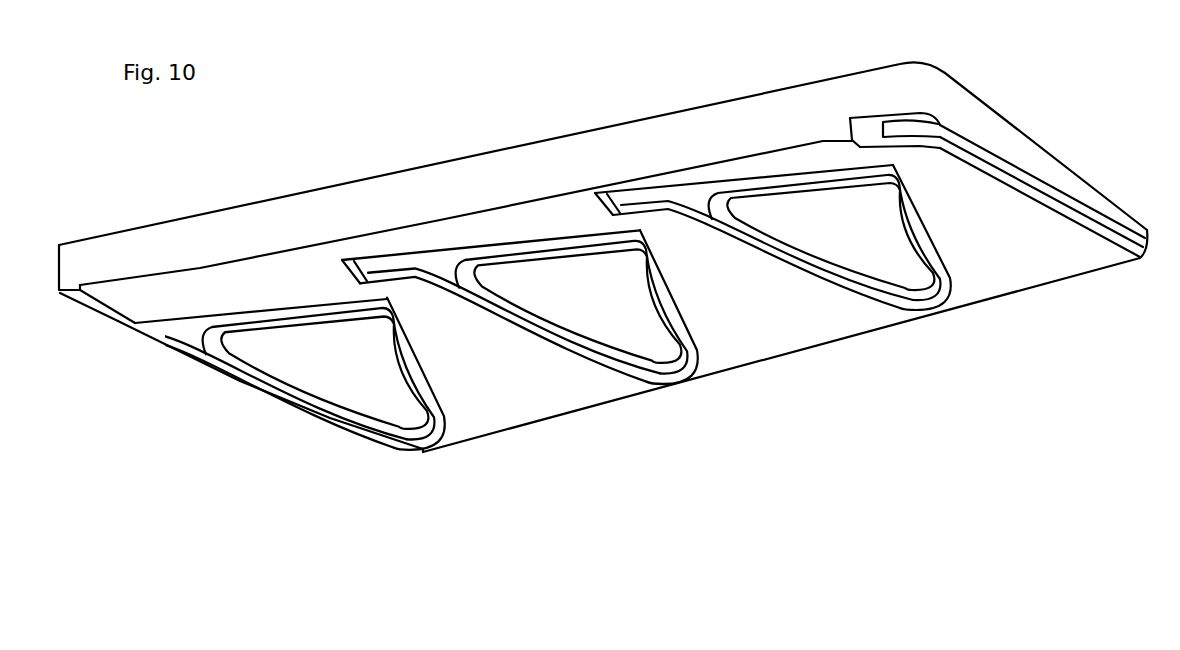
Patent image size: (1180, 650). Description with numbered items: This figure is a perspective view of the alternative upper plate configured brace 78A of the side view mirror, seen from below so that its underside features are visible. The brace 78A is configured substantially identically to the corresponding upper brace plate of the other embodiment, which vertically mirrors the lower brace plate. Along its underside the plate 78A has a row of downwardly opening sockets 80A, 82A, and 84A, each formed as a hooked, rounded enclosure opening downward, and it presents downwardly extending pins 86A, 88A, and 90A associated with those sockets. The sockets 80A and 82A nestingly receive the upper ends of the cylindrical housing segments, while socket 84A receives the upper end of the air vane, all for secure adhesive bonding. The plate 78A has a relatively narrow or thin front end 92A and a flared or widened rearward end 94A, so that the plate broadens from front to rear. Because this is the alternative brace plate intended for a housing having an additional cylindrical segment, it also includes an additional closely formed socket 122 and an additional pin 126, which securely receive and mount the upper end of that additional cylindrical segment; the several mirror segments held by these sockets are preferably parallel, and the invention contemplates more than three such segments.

The upper plate configured brace 78A is at (603, 284).
The downwardly opening socket 80A is at (780, 321).
The downwardly opening socket 82A is at (564, 373).
The downwardly opening socket 84A is at (1018, 173).
The downwardly extending pin 86A is at (873, 257).
The downwardly extending pin 88A is at (612, 323).
The downwardly extending pin 90A is at (918, 143).
The front end 92A is at (975, 308).
The rearward end 94A is at (583, 150).
The socket 122 is at (276, 419).
The pin 126 is at (330, 385).